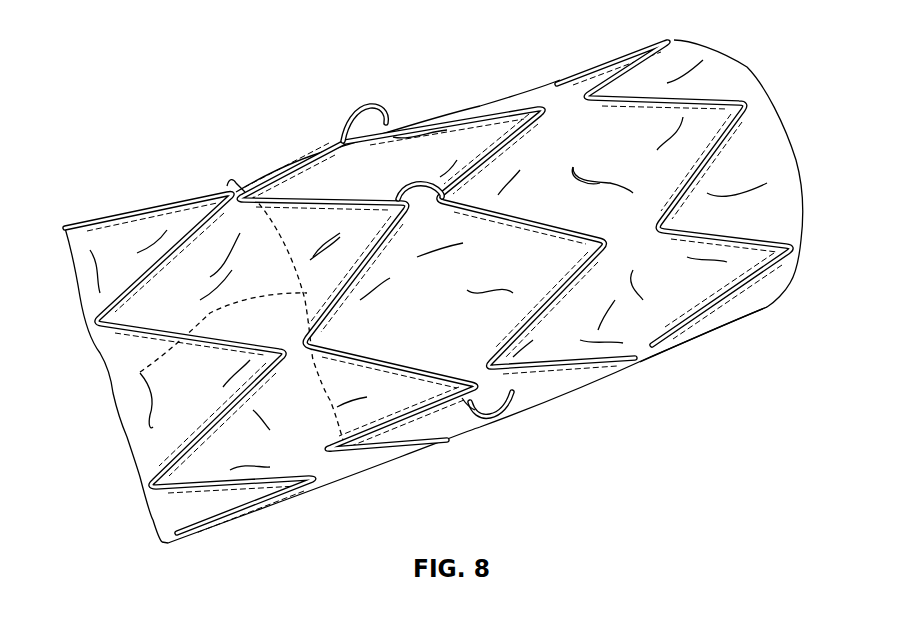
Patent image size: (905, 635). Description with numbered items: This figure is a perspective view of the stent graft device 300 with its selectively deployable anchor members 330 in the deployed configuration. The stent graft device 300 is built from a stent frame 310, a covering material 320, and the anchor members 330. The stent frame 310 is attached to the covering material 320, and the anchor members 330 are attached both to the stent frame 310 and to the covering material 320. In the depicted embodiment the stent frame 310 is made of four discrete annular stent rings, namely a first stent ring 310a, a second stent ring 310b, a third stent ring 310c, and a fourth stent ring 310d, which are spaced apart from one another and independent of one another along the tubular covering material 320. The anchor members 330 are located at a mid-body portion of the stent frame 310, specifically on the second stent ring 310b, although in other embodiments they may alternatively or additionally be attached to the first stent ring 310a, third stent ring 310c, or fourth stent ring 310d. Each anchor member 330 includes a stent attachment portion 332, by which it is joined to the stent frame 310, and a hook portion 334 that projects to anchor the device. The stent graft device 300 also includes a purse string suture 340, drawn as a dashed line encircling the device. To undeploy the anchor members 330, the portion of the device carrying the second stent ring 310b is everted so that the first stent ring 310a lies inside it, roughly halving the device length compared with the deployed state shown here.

The stent graft device 300 is at (132, 149).
The stent frame 310 is at (762, 300).
The first stent ring 310a is at (170, 462).
The second stent ring 310b is at (300, 153).
The third stent ring 310c is at (491, 112).
The fourth stent ring 310d is at (727, 90).
The covering material 320 is at (755, 152).
The selectively deployable anchor members 330 is at (373, 193).
The stent attachment portions 332 is at (460, 400).
The hook portions 334 is at (373, 104).
The purse string suture 340 is at (140, 372).